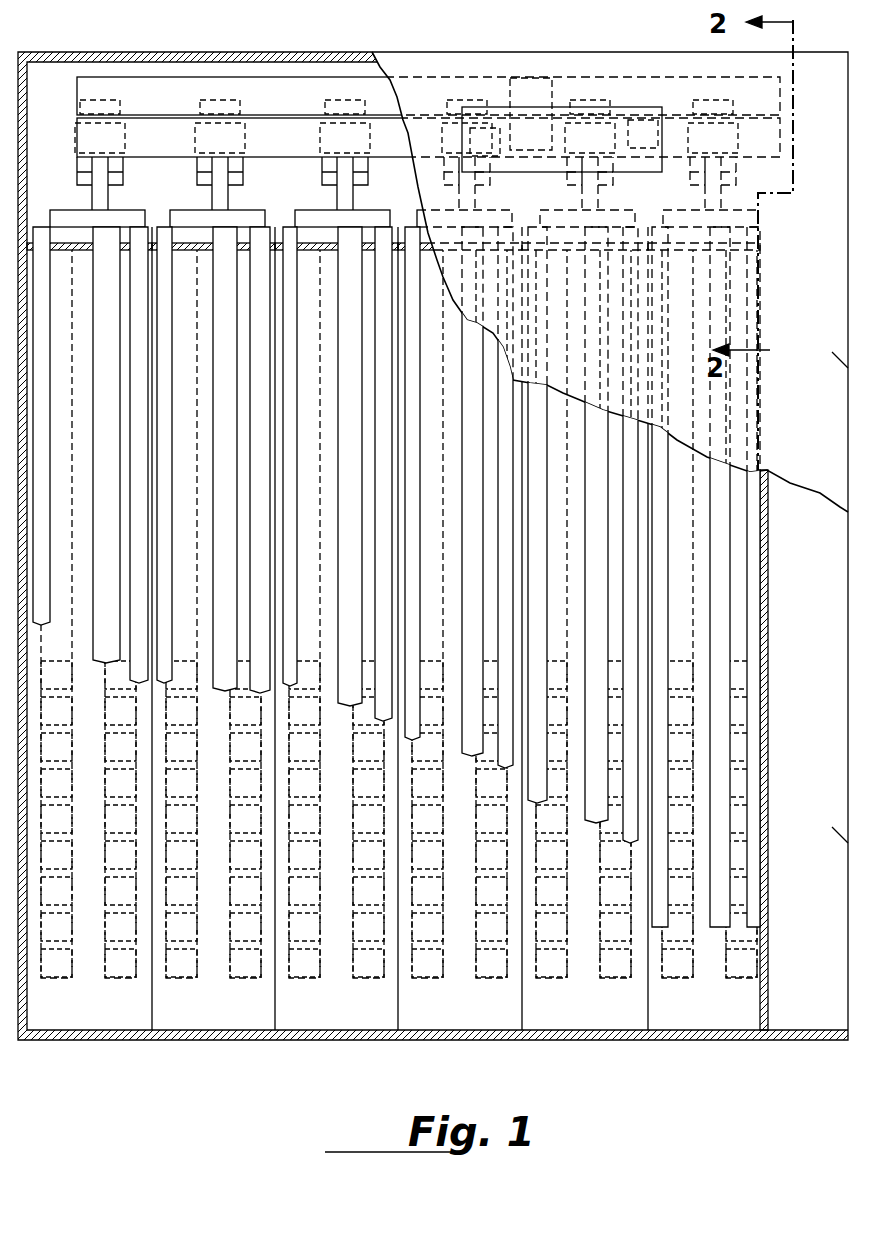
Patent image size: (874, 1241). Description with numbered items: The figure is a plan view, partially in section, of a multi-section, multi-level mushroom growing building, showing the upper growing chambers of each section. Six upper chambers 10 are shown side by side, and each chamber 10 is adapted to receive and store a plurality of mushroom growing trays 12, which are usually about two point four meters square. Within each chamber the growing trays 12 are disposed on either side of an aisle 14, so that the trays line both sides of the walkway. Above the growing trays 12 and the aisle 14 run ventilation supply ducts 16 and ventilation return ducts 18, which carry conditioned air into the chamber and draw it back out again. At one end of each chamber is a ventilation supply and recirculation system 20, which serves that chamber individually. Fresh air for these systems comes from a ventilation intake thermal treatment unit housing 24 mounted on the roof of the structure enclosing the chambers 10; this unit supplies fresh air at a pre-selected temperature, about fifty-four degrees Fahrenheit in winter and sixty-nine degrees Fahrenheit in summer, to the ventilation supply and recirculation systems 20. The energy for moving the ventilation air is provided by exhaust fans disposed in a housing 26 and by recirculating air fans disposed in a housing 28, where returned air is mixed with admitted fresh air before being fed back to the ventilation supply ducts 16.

The upper chamber 10 is at (140, 1017).
The mushroom growing tray 12 is at (118, 845).
The aisle 14 is at (95, 972).
The ventilation supply duct 16 is at (34, 246).
The ventilation return duct 18 is at (97, 427).
The ventilation supply and recirculation system 20 is at (70, 92).
The ventilation intake thermal treatment unit housing 24 is at (498, 125).
The exhaust fan housing 26 is at (80, 117).
The recirculating air fan housing 28 is at (80, 165).